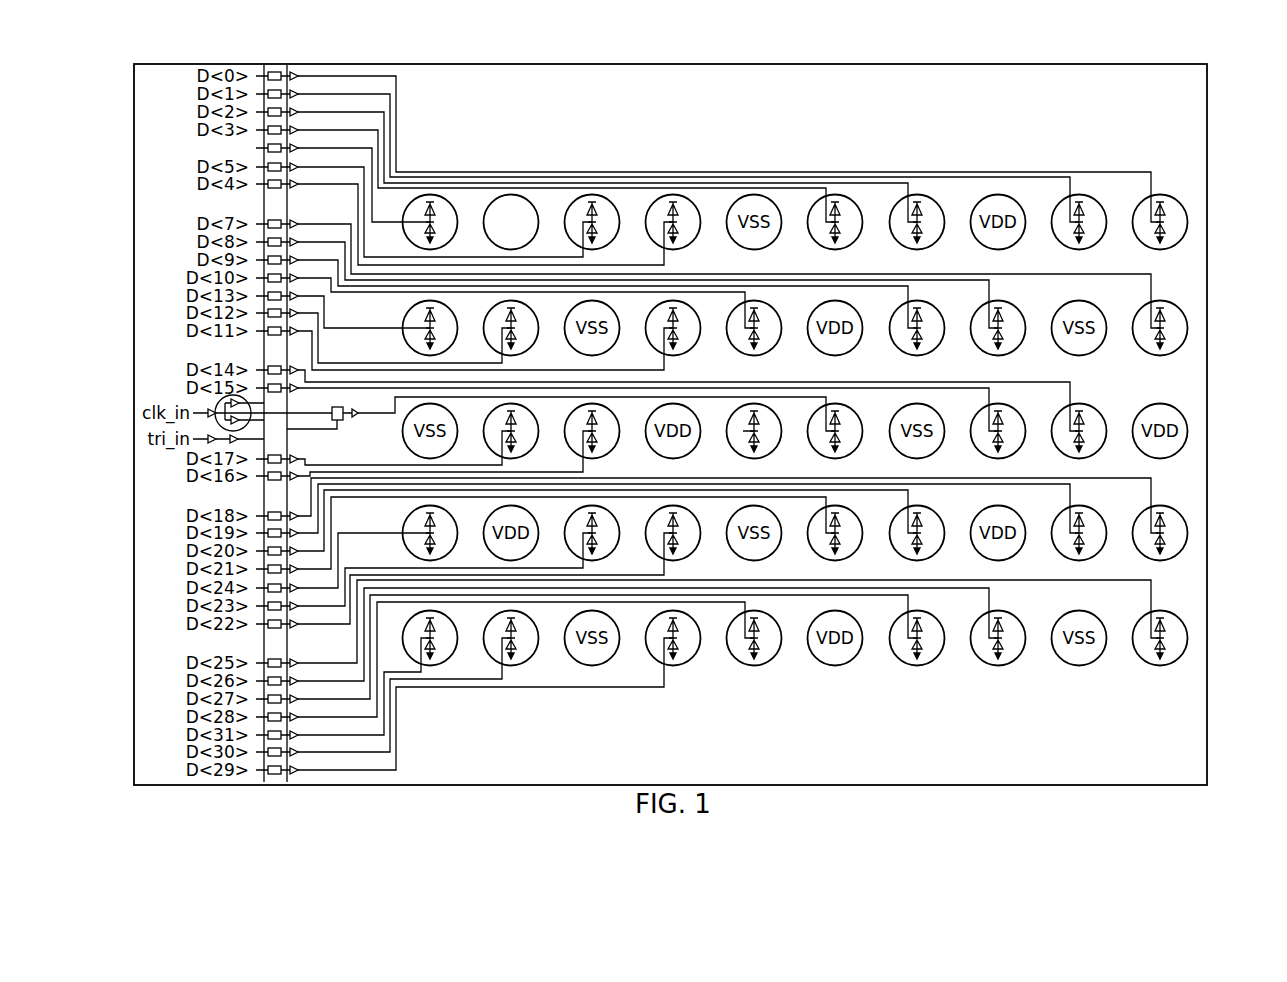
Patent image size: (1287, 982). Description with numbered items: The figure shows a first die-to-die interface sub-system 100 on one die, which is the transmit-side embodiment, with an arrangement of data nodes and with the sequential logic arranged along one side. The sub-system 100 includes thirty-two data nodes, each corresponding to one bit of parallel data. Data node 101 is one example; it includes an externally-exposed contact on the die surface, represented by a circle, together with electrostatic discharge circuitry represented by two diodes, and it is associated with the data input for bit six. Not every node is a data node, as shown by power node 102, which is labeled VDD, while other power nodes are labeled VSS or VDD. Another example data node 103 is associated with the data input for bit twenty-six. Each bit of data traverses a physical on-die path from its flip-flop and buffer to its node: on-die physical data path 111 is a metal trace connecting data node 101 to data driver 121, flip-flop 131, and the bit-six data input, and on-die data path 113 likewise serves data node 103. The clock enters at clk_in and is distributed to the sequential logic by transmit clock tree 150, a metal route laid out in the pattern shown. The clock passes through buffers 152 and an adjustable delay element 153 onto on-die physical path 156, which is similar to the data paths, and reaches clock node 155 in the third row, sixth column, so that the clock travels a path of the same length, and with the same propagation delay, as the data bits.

The die-to-die interface sub-system 100 is at (1220, 126).
The data node 101 is at (456, 201).
The power node 102 is at (988, 195).
The data node 103 is at (998, 668).
The on-die physical data path 111 is at (389, 217).
The on-die data path 113 is at (958, 594).
The data driver 121 is at (291, 161).
The flip-flop 131 is at (261, 152).
The transmit clock tree 150 is at (261, 352).
The buffers 152 is at (251, 420).
The adjustable delay element 153 is at (337, 405).
The clock node 155 is at (861, 412).
The on-die physical path 156 is at (717, 400).